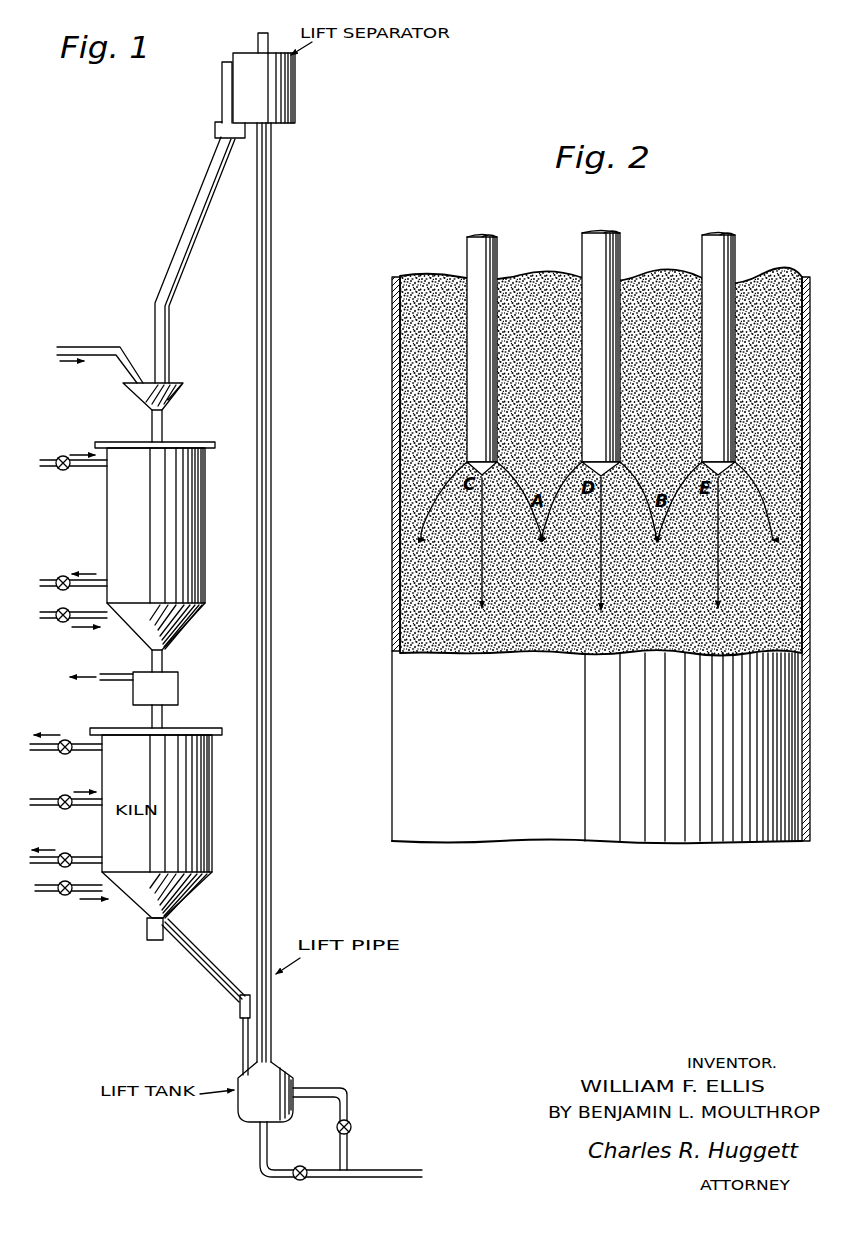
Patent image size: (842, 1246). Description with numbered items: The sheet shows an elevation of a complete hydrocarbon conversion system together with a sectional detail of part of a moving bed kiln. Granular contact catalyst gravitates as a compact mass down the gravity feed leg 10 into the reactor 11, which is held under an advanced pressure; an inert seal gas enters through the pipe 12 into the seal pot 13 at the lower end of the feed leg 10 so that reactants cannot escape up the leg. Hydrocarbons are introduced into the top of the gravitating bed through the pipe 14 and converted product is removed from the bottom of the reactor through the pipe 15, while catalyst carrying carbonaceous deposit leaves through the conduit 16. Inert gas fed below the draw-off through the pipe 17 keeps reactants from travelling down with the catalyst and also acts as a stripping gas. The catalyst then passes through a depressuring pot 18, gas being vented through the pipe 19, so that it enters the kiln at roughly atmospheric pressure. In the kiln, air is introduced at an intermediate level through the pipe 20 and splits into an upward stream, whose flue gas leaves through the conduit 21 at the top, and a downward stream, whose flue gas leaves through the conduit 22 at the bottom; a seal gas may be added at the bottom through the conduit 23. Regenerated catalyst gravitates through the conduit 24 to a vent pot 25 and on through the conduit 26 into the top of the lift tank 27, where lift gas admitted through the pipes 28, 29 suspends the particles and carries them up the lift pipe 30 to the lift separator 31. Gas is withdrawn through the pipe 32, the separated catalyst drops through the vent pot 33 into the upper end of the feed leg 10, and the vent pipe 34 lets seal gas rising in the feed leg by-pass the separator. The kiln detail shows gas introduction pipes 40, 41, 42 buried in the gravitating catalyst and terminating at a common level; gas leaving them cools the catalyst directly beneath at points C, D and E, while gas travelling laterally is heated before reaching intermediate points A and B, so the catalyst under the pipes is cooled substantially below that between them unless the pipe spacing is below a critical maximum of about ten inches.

In FIG. 1, the gravity feed leg 10 is at (178, 247).
In FIG. 1, the reactor 11 is at (196, 490).
In FIG. 1, the pipe 12 is at (100, 346).
In FIG. 1, the seal pot 13 is at (172, 397).
In FIG. 1, the pipe 14 is at (48, 470).
In FIG. 1, the pipe 15 is at (48, 578).
In FIG. 1, the conduit 16 is at (165, 657).
In FIG. 1, the pipe 17 is at (46, 622).
In FIG. 1, the depressuring pot 18 is at (155, 688).
In FIG. 1, the pipe 19 is at (116, 673).
In FIG. 1, the pipe 20 is at (46, 807).
In FIG. 1, the conduit 21 is at (46, 752).
In FIG. 1, the conduit 22 is at (88, 856).
In FIG. 1, the conduit 23 is at (46, 895).
In FIG. 1, the conduit 24 is at (192, 962).
In FIG. 1, the vent pot 25 is at (244, 994).
In FIG. 1, the conduit 26 is at (241, 1040).
In FIG. 1, the lift tank 27 is at (265, 1092).
In FIG. 1, the pipe 28 is at (282, 1168).
In FIG. 1, the pipe 29 is at (358, 1099).
In FIG. 1, the lift pipe 30 is at (270, 747).
In FIG. 1, the lift separator 31 is at (282, 97).
In FIG. 1, the pipe 32 is at (257, 43).
In FIG. 1, the vent pot 33 is at (214, 130).
In FIG. 1, the vent pipe 34 is at (221, 80).
In FIG. 2, the gas introduction pipe 40 is at (498, 250).
In FIG. 2, the gas introduction pipe 41 is at (622, 250).
In FIG. 2, the gas introduction pipe 42 is at (737, 250).